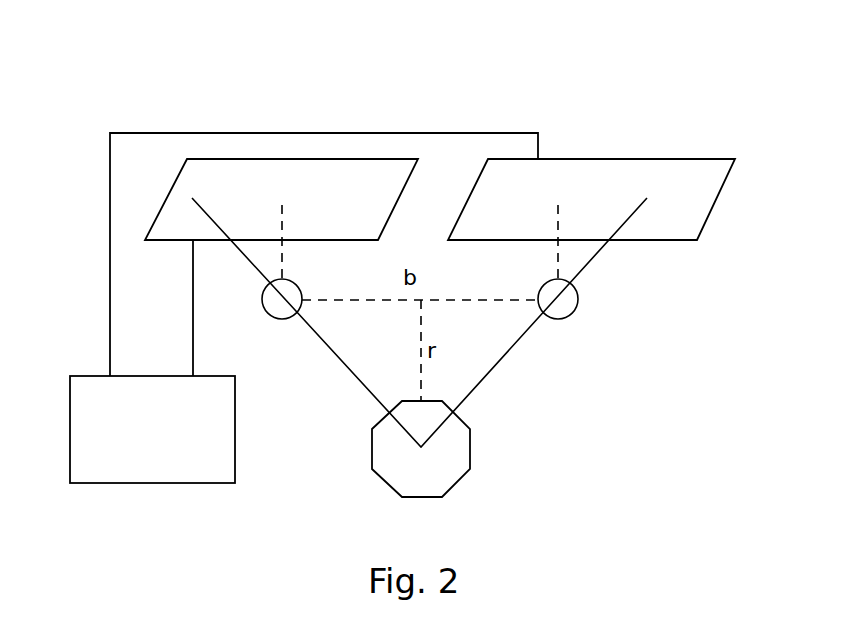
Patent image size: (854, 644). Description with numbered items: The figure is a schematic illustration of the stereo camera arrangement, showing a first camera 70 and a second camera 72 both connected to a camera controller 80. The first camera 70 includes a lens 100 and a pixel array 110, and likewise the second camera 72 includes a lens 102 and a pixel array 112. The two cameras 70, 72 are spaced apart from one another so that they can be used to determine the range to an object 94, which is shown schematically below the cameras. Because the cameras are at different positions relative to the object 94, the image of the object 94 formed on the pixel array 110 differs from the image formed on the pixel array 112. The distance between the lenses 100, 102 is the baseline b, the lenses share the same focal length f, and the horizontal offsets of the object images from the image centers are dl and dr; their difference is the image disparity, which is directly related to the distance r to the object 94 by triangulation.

The first camera 70 is at (235, 190).
The second camera 72 is at (591, 191).
The pixel array 110 is at (167, 197).
The pixel array 112 is at (592, 157).
The lens 100 is at (284, 320).
The lens 102 is at (560, 320).
The camera controller 80 is at (241, 423).
The object 94 is at (470, 427).